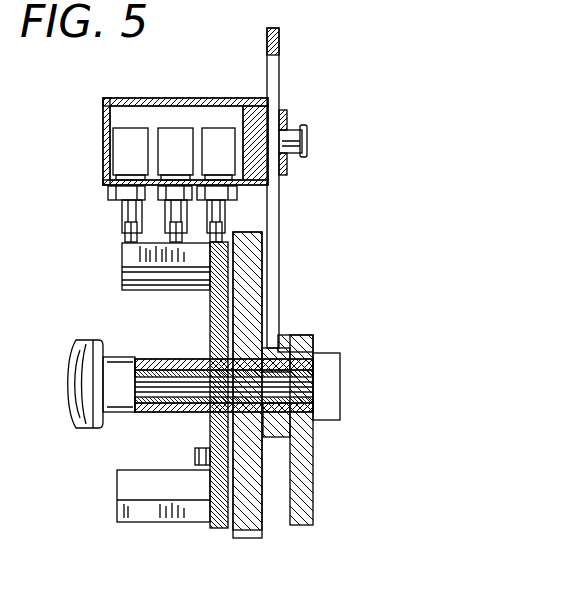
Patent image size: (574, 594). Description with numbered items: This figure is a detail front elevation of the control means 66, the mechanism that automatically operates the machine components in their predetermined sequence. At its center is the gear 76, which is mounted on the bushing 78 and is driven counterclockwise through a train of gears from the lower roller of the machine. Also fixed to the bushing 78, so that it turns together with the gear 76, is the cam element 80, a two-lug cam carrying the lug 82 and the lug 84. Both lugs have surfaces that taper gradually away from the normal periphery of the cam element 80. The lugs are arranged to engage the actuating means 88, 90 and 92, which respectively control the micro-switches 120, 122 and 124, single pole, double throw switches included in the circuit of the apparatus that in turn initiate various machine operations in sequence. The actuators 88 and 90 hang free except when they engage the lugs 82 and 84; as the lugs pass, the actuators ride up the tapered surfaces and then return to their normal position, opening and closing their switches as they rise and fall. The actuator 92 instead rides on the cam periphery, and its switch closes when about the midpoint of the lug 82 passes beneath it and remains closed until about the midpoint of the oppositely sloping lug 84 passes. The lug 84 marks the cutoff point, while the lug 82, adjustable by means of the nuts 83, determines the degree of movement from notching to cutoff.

The control means 66 is at (347, 305).
The gear 76 is at (257, 230).
The bushing 78 is at (208, 354).
The cam element 80 is at (212, 303).
The lug 82 is at (156, 520).
The nuts 83 is at (202, 448).
The lug 84 is at (135, 255).
The actuating means 88 is at (124, 211).
The actuating means 90 is at (183, 213).
The actuating means 92 is at (227, 209).
The micro-switch 120 is at (128, 130).
The micro-switch 122 is at (167, 130).
The micro-switch 124 is at (215, 138).